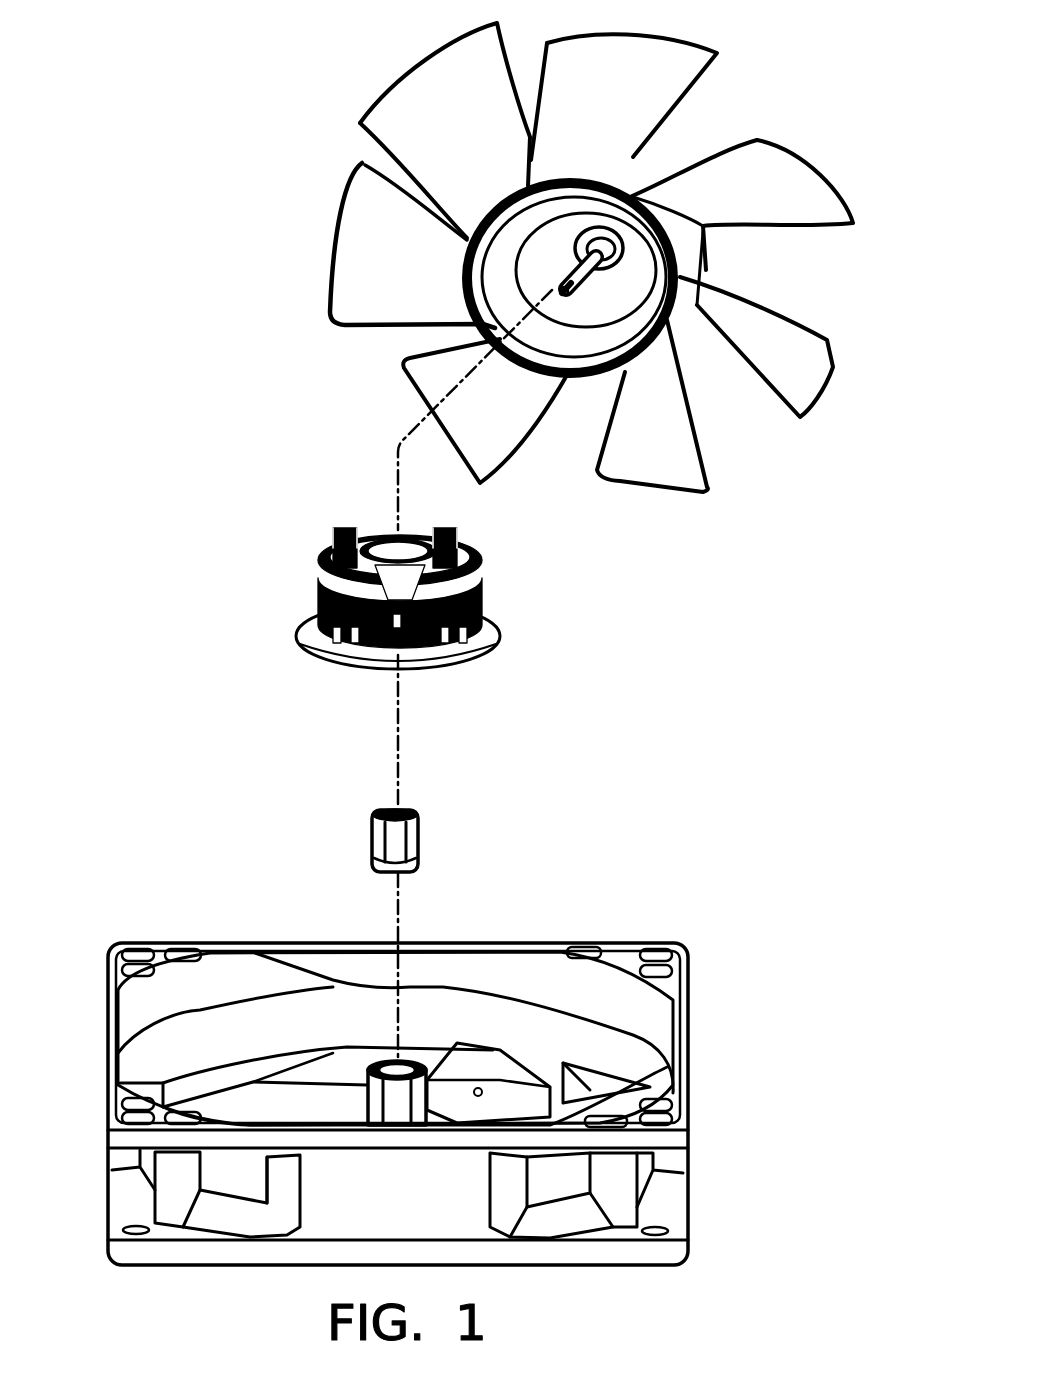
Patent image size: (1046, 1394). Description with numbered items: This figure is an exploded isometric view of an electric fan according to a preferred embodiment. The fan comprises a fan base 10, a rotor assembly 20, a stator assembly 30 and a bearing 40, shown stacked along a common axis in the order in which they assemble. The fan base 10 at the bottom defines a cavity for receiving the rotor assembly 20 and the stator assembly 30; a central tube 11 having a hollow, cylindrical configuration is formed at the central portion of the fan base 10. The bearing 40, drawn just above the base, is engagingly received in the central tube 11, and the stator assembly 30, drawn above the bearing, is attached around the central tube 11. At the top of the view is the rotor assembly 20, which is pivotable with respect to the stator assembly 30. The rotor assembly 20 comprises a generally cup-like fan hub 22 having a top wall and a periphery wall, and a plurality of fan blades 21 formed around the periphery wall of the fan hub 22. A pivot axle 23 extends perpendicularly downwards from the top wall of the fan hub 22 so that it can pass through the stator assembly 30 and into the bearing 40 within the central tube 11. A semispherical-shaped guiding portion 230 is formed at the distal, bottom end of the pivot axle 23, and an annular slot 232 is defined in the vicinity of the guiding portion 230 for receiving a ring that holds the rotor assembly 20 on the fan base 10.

The fan base 10 is at (640, 1012).
The central tube 11 is at (373, 1067).
The rotor assembly 20 is at (778, 117).
The fan blades 21 is at (777, 203).
The fan hub 22 is at (668, 318).
The pivot axle 23 is at (585, 255).
The guiding portion 230 is at (578, 280).
The annular slot 232 is at (578, 292).
The stator assembly 30 is at (483, 607).
The bearing 40 is at (424, 836).